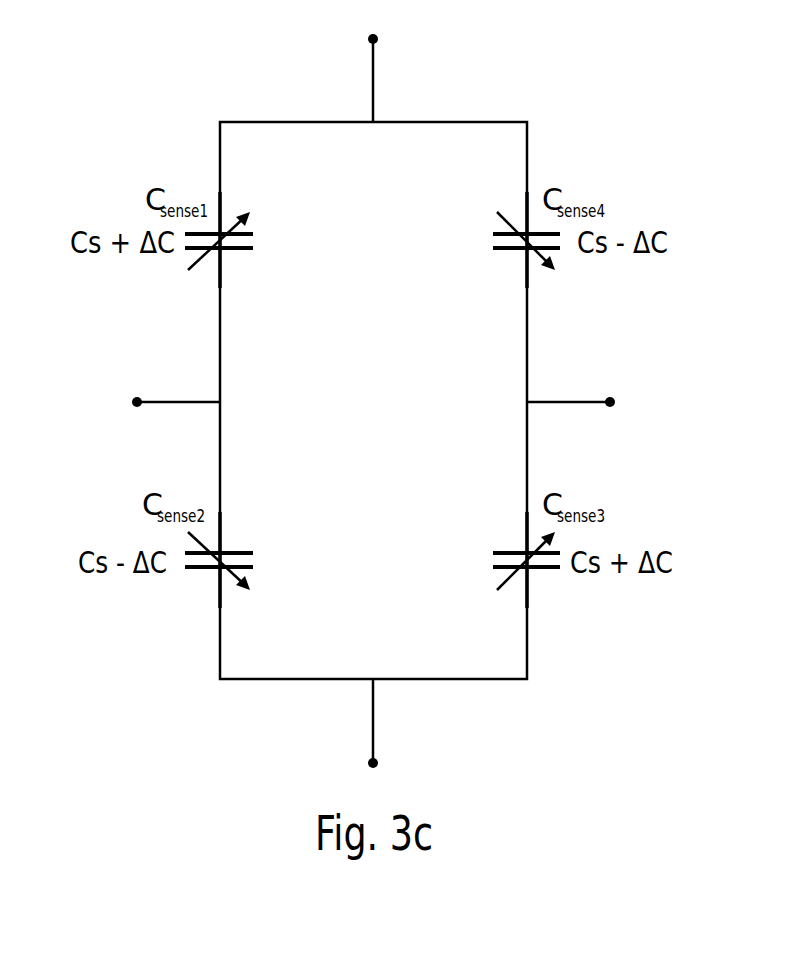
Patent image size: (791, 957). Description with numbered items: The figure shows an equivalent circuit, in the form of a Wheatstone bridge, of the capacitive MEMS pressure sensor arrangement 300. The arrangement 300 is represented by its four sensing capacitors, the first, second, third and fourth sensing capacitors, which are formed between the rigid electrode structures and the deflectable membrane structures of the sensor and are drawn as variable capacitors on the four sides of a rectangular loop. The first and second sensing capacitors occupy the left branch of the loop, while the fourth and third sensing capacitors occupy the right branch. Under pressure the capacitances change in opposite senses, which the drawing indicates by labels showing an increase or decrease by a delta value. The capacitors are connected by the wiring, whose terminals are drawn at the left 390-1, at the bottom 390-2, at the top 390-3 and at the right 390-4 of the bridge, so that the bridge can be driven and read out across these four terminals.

The capacitive MEMS pressure sensor arrangement 300 is at (118, 48).
The wiring 390-1 is at (178, 402).
The wiring 390-2 is at (373, 718).
The wiring 390-3 is at (373, 78).
The wiring 390-4 is at (568, 402).